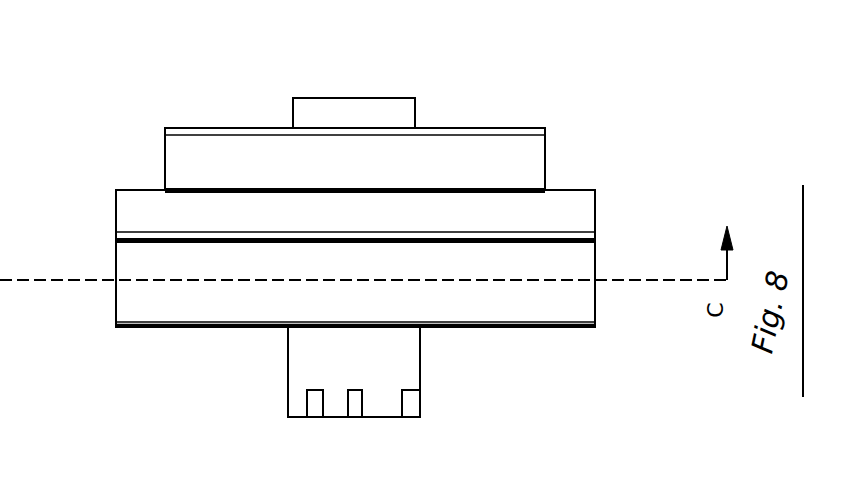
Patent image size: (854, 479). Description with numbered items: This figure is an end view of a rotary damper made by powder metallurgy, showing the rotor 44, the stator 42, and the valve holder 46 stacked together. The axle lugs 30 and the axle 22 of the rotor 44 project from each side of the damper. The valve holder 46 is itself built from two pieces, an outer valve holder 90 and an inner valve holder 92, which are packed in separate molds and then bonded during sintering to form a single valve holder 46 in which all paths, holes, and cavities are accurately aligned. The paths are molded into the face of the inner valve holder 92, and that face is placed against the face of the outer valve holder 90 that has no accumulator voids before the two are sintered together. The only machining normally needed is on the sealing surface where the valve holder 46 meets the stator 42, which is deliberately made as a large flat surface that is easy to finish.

The valve holder 46 is at (357, 241).
The axle 22 is at (307, 115).
The outer valve holder 90 is at (510, 152).
The inner valve holder 92 is at (553, 209).
The stator 42 is at (172, 298).
The axle lugs 30 is at (327, 360).
The rotor 44 is at (422, 363).